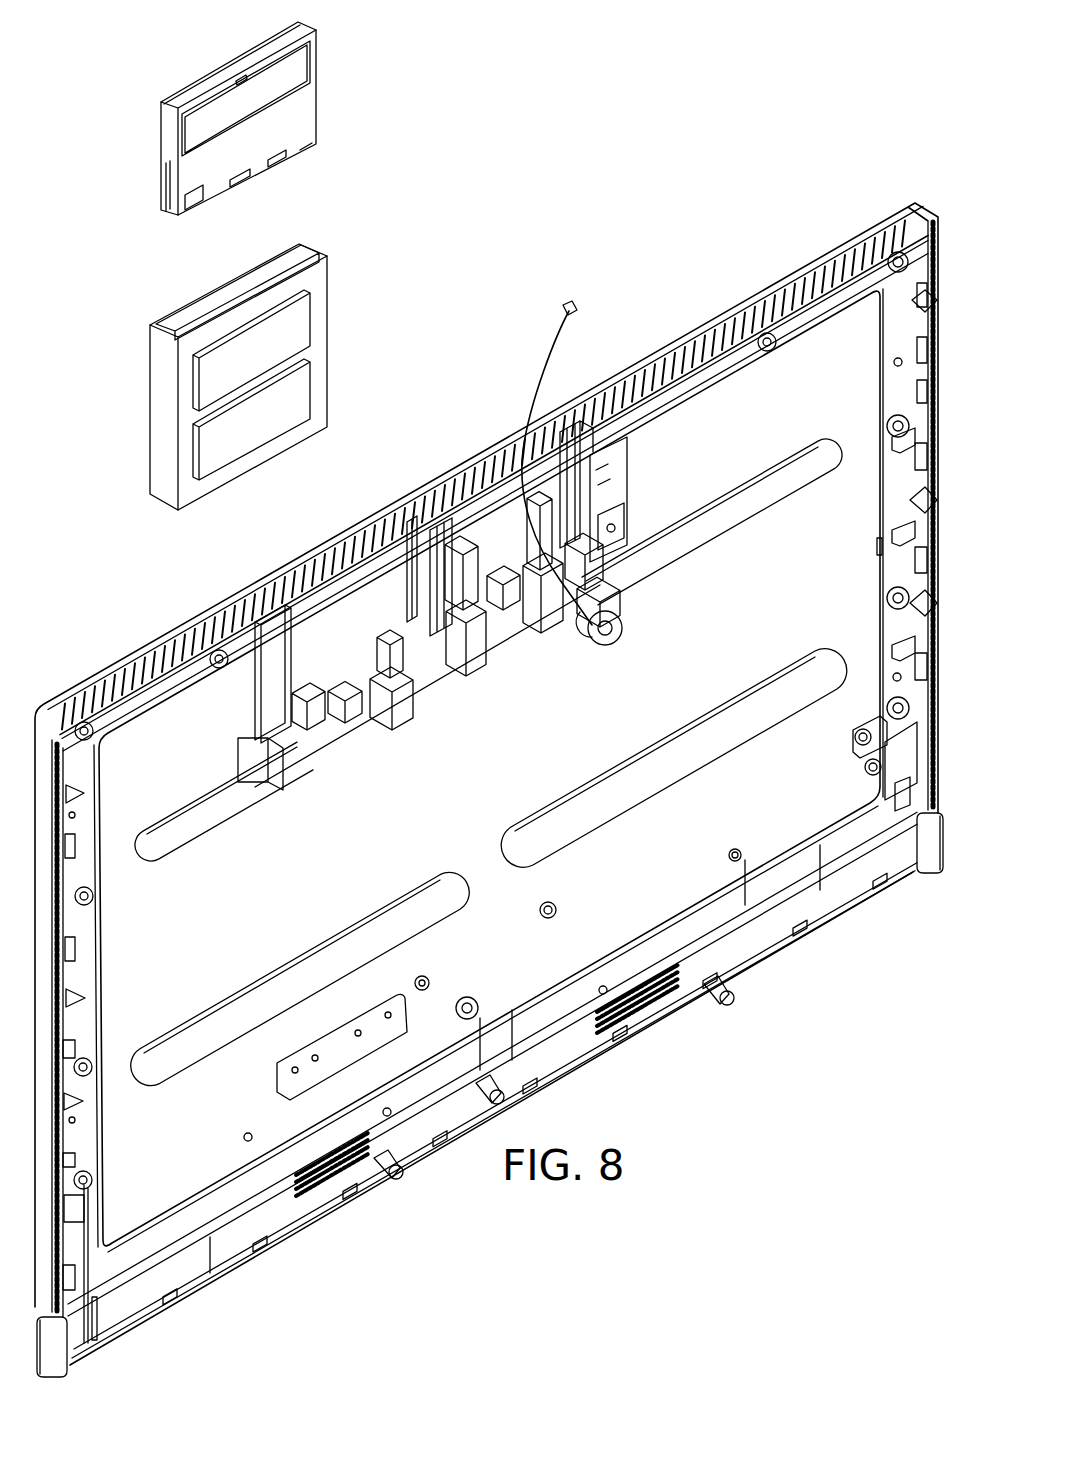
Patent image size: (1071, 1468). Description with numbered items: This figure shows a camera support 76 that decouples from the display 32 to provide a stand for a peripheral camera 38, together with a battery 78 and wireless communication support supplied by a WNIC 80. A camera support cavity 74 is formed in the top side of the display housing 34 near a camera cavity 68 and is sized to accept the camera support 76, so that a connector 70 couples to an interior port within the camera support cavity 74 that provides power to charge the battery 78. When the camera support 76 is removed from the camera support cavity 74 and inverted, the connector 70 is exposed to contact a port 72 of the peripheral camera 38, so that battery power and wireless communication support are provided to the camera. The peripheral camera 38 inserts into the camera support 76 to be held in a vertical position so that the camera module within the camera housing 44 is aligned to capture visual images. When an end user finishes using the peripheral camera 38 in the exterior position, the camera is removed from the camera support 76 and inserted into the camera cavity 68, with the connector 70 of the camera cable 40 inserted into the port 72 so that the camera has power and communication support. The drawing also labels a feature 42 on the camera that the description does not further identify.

The display 32 is at (489, 751).
The display housing 34 is at (210, 612).
The peripheral camera 38 is at (251, 126).
The camera cable 40 is at (551, 363).
The latch tab 42 is at (241, 76).
The camera housing 44 is at (160, 134).
The camera cavity 68 is at (475, 497).
The connector 70 is at (577, 311).
The port 72 is at (192, 208).
The camera support cavity 74 is at (333, 577).
The camera support 76 is at (238, 377).
The battery 78 is at (312, 330).
The WNIC 80 is at (312, 400).